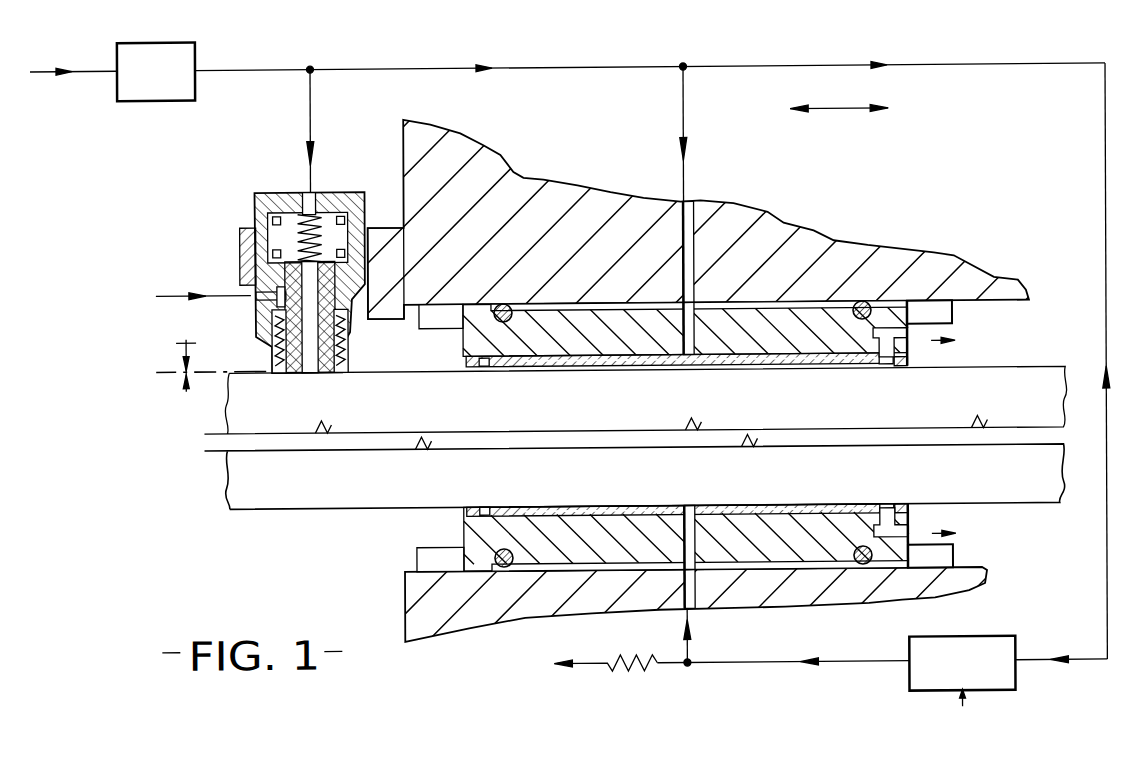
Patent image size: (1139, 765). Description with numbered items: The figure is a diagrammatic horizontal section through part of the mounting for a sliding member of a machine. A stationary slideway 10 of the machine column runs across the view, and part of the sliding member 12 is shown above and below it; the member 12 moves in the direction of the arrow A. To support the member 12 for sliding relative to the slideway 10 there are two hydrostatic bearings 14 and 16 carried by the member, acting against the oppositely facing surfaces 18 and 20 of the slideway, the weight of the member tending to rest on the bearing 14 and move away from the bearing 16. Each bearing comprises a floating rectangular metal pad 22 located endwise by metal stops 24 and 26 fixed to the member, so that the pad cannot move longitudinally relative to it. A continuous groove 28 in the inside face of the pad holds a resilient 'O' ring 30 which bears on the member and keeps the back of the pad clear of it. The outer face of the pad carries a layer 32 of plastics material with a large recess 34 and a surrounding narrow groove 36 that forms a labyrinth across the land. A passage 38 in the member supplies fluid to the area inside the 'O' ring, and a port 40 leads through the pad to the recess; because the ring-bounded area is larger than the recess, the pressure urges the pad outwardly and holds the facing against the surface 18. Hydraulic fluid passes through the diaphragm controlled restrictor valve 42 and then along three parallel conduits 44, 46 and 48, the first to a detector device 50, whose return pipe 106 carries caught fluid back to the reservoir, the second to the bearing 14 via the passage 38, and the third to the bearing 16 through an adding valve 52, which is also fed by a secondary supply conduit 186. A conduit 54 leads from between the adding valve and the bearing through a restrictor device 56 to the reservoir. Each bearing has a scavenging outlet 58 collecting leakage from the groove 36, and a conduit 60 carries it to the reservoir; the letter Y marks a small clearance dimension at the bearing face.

The slideway 10 is at (614, 456).
The sliding member 12 is at (528, 187).
The hydrostatic bearing 14 is at (669, 420).
The hydrostatic bearing 16 is at (458, 533).
The slideway surface 18 is at (368, 375).
The slideway surface 20 is at (336, 512).
The floating metal pad 22 is at (718, 324).
The stop 24 is at (447, 316).
The stop 26 is at (935, 320).
The groove 28 is at (545, 309).
The 'O' ring 30 is at (506, 309).
The layer of plastics material 32 is at (535, 371).
The recess 34 is at (580, 371).
The groove 36 is at (483, 369).
The passage 38 is at (695, 221).
The port 40 is at (698, 371).
The diaphragm controlled restrictor valve 42 is at (156, 72).
The conduit 44 is at (312, 120).
The conduit 46 is at (686, 128).
The conduit 48 is at (1104, 366).
The detector device 50 is at (240, 255).
The adding valve 52 is at (962, 663).
The conduit 54 is at (682, 672).
The restrictor device 56 is at (622, 676).
The scavenging outlet 58 is at (895, 345).
The conduit 60 is at (925, 340).
The return pipe 106 is at (225, 297).
The secondary supply conduit 186 is at (957, 708).
The direction of movement A is at (839, 100).
The gap dimension Y is at (216, 365).